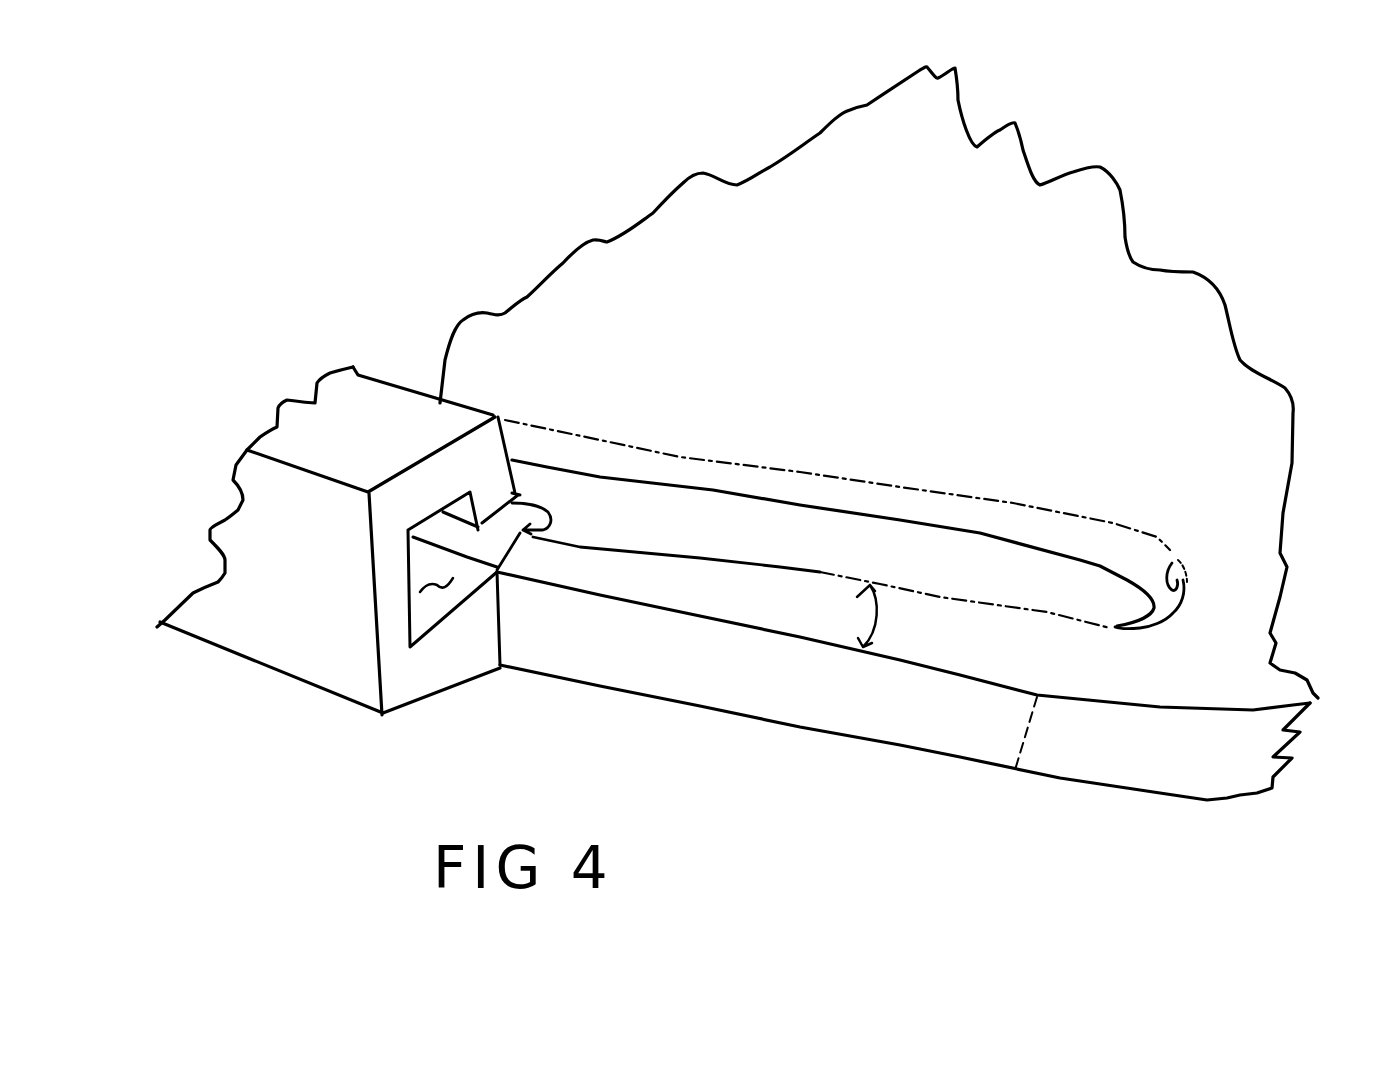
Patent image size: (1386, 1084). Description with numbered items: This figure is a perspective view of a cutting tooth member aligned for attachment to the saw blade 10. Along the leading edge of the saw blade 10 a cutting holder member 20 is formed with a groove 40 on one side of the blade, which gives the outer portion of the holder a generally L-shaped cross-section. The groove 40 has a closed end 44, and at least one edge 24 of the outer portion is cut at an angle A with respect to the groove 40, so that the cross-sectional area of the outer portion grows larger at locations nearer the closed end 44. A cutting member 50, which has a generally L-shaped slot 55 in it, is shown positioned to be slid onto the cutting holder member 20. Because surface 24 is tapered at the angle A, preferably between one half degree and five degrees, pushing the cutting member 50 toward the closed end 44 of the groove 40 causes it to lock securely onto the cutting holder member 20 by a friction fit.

The saw blade 10 is at (1175, 383).
The cutting tooth holder 20 is at (710, 657).
The edge of the outer portion 24 is at (623, 660).
The groove 40 is at (833, 557).
The closed end of groove 44 is at (1172, 563).
The cutting member 50 is at (258, 613).
The L shaped slot 55 is at (423, 600).
The angle A is at (880, 623).